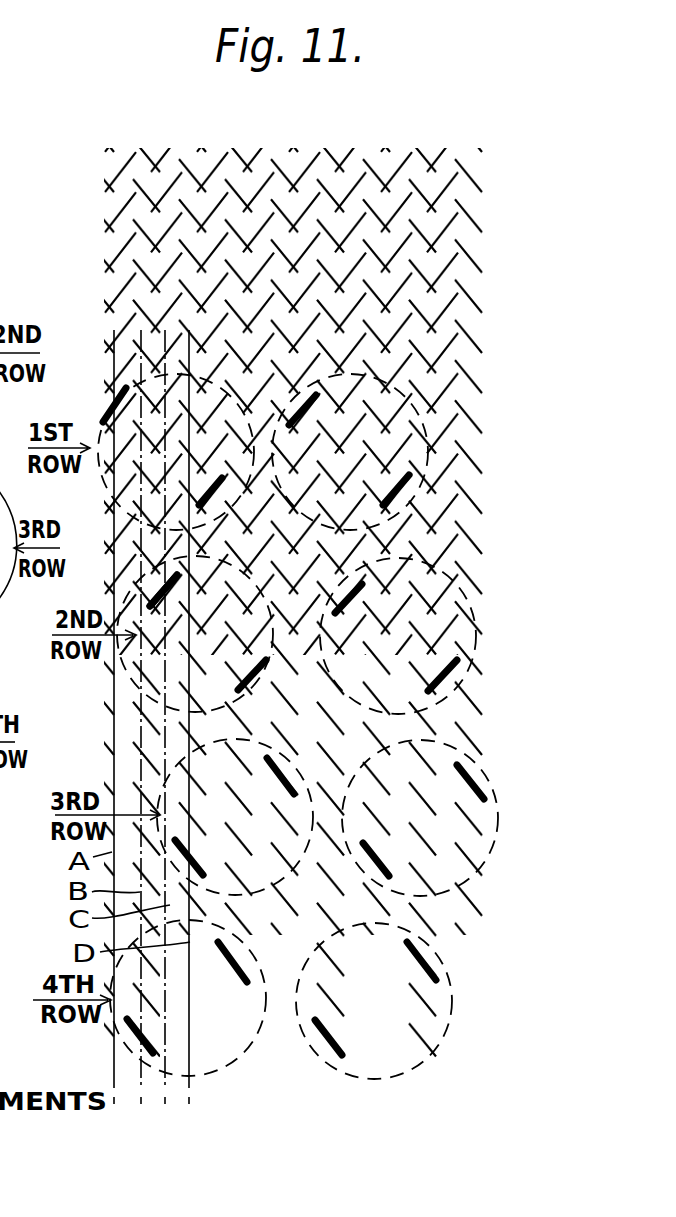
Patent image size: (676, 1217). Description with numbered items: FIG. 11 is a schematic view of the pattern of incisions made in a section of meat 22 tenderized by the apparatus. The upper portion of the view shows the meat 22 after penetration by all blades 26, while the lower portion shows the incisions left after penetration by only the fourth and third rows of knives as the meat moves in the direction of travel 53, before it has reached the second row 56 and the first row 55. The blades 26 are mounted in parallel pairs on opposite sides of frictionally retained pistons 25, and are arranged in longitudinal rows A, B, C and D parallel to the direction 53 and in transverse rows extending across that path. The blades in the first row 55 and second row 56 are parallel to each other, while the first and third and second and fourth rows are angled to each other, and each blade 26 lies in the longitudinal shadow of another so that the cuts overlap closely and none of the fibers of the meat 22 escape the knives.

The meat 22 is at (450, 205).
The piston 25 is at (150, 578).
The blade 26 is at (108, 403).
The direction of travel 53 is at (93, 1048).
The first transverse row 55 is at (92, 409).
The second transverse row 56 is at (160, 693).